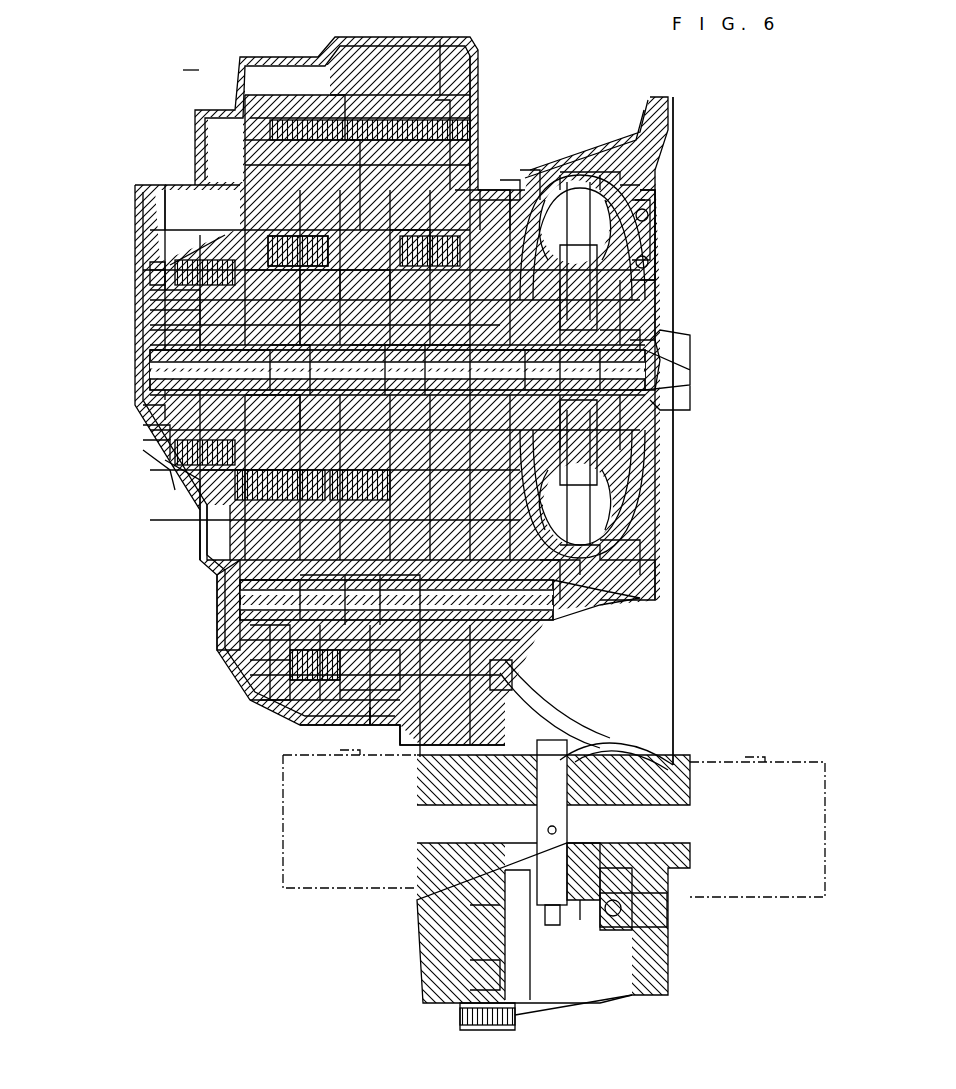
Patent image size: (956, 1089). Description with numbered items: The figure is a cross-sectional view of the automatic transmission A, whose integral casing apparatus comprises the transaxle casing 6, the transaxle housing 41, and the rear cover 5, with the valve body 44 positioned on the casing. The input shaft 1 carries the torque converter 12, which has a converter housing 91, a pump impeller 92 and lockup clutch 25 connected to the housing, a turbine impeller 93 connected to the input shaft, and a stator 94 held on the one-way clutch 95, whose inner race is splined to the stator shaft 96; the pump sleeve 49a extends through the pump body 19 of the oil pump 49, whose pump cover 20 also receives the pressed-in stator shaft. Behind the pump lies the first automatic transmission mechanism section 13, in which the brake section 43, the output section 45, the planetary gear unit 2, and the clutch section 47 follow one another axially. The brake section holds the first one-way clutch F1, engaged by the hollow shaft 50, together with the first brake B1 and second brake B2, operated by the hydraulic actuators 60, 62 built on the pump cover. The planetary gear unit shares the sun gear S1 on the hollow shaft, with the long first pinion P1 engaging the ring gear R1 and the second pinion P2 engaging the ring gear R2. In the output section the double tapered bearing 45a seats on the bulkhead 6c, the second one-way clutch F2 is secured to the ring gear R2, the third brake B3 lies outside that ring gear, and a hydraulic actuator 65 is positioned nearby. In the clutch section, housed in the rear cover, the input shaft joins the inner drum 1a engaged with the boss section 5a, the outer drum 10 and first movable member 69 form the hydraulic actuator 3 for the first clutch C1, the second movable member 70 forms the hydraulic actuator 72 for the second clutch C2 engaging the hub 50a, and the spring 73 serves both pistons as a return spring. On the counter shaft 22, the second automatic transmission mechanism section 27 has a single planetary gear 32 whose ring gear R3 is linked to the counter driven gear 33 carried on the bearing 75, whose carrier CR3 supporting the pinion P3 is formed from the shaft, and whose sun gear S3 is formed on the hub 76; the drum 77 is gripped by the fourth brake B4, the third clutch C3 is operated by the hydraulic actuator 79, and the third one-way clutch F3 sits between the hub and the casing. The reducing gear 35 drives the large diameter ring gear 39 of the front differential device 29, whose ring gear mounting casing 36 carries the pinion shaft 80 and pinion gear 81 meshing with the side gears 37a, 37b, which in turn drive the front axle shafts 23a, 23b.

The automatic transmission A is at (190, 90).
The valve body 44 is at (283, 85).
The hydraulic actuator 65 is at (350, 180).
The output section 45 is at (352, 230).
The brake section 43 is at (440, 115).
The first automatic transmission mechanism section 13 is at (192, 183).
The clutch section 47 is at (218, 232).
The first clutch C1 is at (277, 244).
The planetary gear unit 2 is at (282, 245).
The third brake B3 is at (318, 254).
The second one-way clutch F2 is at (358, 254).
The rear cover 5 is at (170, 552).
The second clutch C2 is at (150, 265).
The outer drum 10 is at (150, 278).
The spring 73 is at (150, 300).
The inner drum 1a is at (150, 313).
The boss section 5a is at (150, 336).
The second brake B2 is at (470, 195).
The transaxle casing 6 is at (488, 195).
The hydraulic actuator 62 is at (505, 178).
The oil pump 49 is at (530, 178).
The transaxle housing 41 is at (598, 135).
The torque converter 12 is at (598, 175).
The lockup clutch 25 is at (656, 220).
The hydraulic actuator 60 is at (640, 290).
The one-way clutch 95 is at (640, 342).
The input shaft 1 is at (640, 400).
The first brake B1 is at (582, 252).
The sun gear S1 is at (210, 370).
The first pinion P1 is at (290, 370).
The hollow shaft 50 is at (350, 366).
The double tapered bearing 45a is at (367, 370).
The bulkhead 6c is at (405, 370).
The first one-way clutch F1 is at (445, 370).
The pump cover 20 is at (502, 370).
The stator shaft 96 is at (542, 370).
The pump body 19 is at (580, 370).
The hydraulic actuator 3 is at (150, 410).
The first movable member 69 is at (150, 430).
The second movable member 70 is at (152, 448).
The hydraulic actuator 72 is at (160, 465).
The hub 50a is at (200, 482).
The second pinion P2 is at (284, 440).
The ring gear R1 is at (222, 485).
The ring gear R2 is at (270, 485).
The second automatic transmission mechanism section 27 is at (219, 527).
The third one-way clutch F3 is at (212, 570).
The counter shaft 22 is at (217, 617).
The hydraulic actuator 79 is at (258, 650).
The third clutch C3 is at (262, 700).
The drum 77 is at (290, 700).
The fourth brake B4 is at (312, 700).
The ring gear R3 is at (345, 690).
The single planetary gear 32 is at (335, 731).
The counter driven gear 33 is at (410, 722).
The stator 94 is at (640, 490).
The pump sleeve 49a is at (535, 555).
The converter housing 91 is at (590, 555).
The pump impeller 92 is at (560, 560).
The turbine impeller 93 is at (605, 545).
The hub 76 is at (272, 600).
The sun gear S3 is at (322, 600).
The pinion P3 is at (362, 600).
The carrier CR3 is at (400, 600).
The bearing 75 is at (396, 600).
The reducing gear 35 is at (514, 675).
The ring gear mounting casing 36 is at (540, 735).
The front differential device 29 is at (588, 752).
The front axle shaft 23a is at (385, 890).
The front axle shaft 23b is at (722, 900).
The pinion shaft 80 is at (553, 905).
The pinion gear 81 is at (590, 905).
The side gear 37a is at (553, 879).
The side gear 37b is at (640, 910).
The large diameter ring gear 39 is at (420, 999).